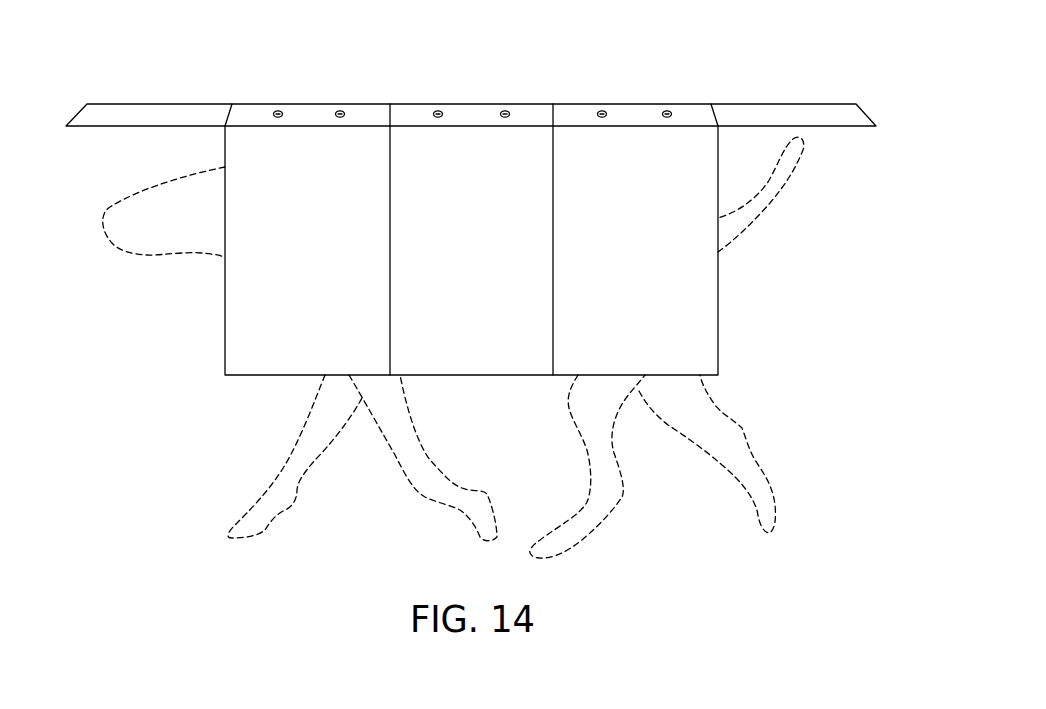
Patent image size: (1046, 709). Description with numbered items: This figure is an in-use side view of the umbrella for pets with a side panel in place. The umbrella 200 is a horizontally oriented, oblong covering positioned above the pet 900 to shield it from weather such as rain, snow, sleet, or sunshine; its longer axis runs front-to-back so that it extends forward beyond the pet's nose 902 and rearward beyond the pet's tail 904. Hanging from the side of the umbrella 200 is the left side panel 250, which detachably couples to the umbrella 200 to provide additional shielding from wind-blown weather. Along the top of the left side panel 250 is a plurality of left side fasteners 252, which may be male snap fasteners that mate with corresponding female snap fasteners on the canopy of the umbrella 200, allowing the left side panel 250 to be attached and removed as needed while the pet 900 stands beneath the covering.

The umbrella 200 is at (148, 113).
The left side panel 250 is at (225, 320).
The left side fasteners 252 is at (666, 111).
The pet 900 is at (308, 421).
The pet's nose 902 is at (125, 253).
The pet's tail 904 is at (800, 158).